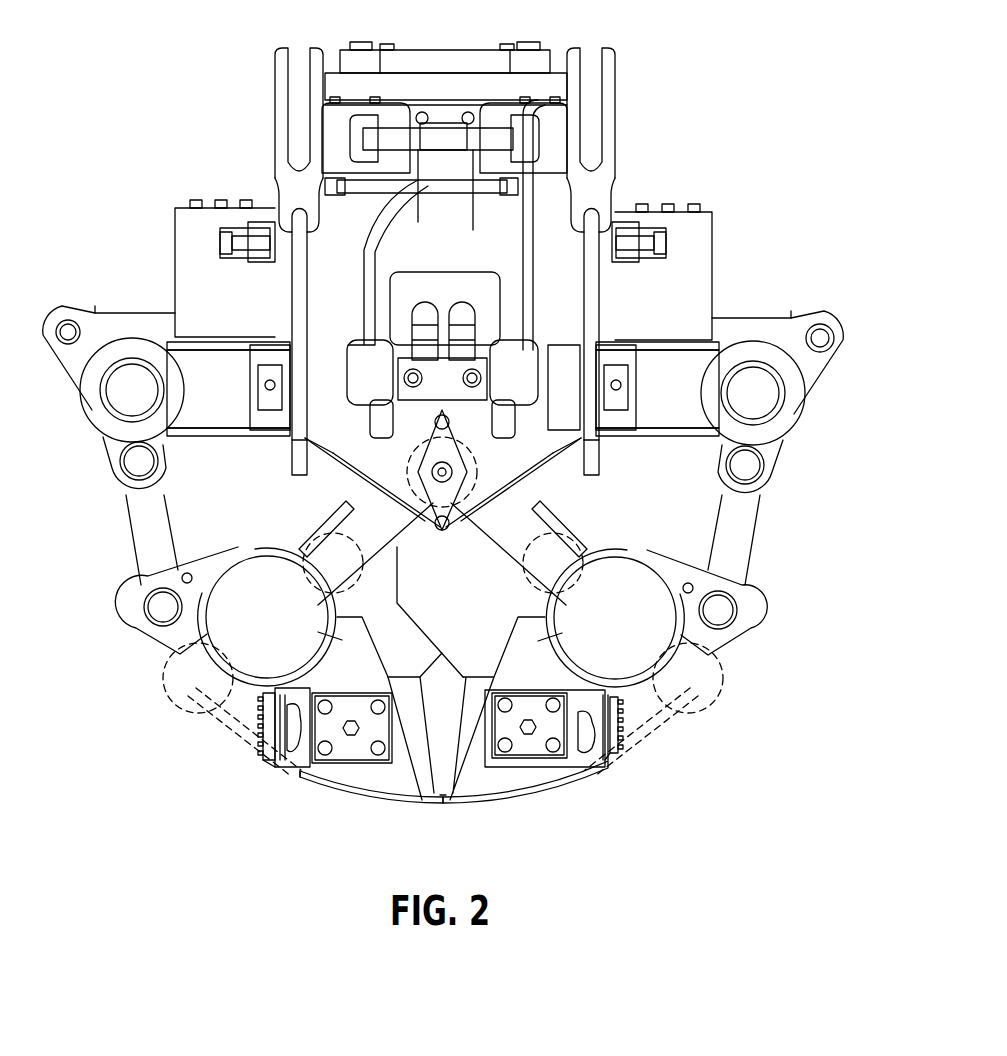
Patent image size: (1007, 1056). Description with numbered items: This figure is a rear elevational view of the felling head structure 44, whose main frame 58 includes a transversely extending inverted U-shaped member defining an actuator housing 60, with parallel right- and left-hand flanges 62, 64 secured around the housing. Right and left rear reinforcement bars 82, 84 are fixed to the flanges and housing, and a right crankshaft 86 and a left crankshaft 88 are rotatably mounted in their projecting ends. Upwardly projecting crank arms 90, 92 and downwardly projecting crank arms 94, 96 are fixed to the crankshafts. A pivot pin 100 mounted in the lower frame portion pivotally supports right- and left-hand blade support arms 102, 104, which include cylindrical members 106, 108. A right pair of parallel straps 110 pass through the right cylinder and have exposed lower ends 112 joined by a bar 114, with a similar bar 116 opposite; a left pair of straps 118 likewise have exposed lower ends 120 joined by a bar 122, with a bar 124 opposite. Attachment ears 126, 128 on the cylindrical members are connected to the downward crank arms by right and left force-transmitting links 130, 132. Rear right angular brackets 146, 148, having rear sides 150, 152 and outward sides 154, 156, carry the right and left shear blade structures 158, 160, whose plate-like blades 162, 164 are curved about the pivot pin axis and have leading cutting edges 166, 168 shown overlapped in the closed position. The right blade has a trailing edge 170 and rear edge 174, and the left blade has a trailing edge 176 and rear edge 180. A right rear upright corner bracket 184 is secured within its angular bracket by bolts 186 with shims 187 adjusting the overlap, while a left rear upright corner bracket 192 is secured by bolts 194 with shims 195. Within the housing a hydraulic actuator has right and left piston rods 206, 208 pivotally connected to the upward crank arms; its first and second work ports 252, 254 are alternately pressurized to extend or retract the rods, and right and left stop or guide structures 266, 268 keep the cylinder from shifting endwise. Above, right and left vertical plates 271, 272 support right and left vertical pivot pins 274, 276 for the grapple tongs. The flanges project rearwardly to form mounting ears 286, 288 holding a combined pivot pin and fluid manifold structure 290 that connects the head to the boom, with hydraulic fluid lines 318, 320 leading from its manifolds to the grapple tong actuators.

The felling head structure 44 is at (660, 114).
The main frame 58 is at (718, 245).
The actuator housing 60 is at (225, 268).
The right-hand flange 62 is at (599, 290).
The left-hand flange 64 is at (308, 295).
The right rear reinforcement bar 82 is at (657, 389).
The left rear reinforcement bar 84 is at (228, 389).
The right crankshaft 86 is at (770, 398).
The left crankshaft 88 is at (118, 398).
The upwardly projecting crank arm 90 is at (822, 365).
The upwardly projecting crank arm 92 is at (62, 365).
The downwardly projecting crank arm 94 is at (775, 461).
The downwardly projecting crank arm 96 is at (120, 461).
The pivot pin 100 is at (477, 472).
The right-hand blade support arm 102 is at (619, 540).
The left-hand blade support arm 104 is at (271, 539).
The cylindrical member 106 is at (615, 618).
The cylindrical member 108 is at (267, 617).
The right pair of parallel straps 110 is at (485, 528).
The exposed lower ends 112 is at (700, 697).
The bar 114 is at (702, 683).
The bar 116 is at (528, 510).
The left pair of straps 118 is at (408, 530).
The exposed lower ends 120 is at (190, 700).
The bar 122 is at (178, 680).
The bar 124 is at (352, 548).
The attachment ear 126 is at (748, 591).
The attachment ear 128 is at (143, 610).
The right drop or force-transmitting link 130 is at (752, 536).
The left drop or force-transmitting link 132 is at (135, 538).
The rear right angular bracket 146 is at (604, 776).
The rear right angular bracket 148 is at (268, 772).
The rear side 150 is at (568, 631).
The rear side 152 is at (312, 631).
The outward side 154 is at (602, 712).
The outward side 156 is at (262, 749).
The right shear blade structure 158 is at (577, 786).
The left shear blade structure 160 is at (321, 790).
The plate-like blade 162 is at (520, 798).
The plate-like blade 164 is at (409, 802).
The leading cutting edge 166 is at (441, 798).
The leading cutting edge 168 is at (443, 807).
The trailing edge 170 is at (581, 776).
The rear edge 174 is at (483, 804).
The trailing edge 176 is at (300, 782).
The rear edge 180 is at (359, 796).
The right rear upright corner bracket 184 is at (475, 725).
The bolts 186 is at (509, 704).
The shims 187 is at (606, 762).
The left rear upright corner bracket 192 is at (402, 722).
The bolts 194 is at (330, 703).
The shims 195 is at (288, 700).
The right piston rod 206 is at (750, 322).
The left piston rod 208 is at (138, 318).
The first work port 252 is at (462, 303).
The second work port 254 is at (425, 303).
The right stop or guide structure 266 is at (648, 232).
The left stop or guide structure 268 is at (228, 232).
The right vertical plate 271 is at (472, 220).
The left vertical plate 272 is at (423, 198).
The right vertical pivot pin 274 is at (529, 42).
The left vertical pivot pin 276 is at (361, 42).
The mounting ear 286 is at (599, 470).
The mounting ear 288 is at (292, 468).
The combined pivot pin and fluid manifold structure 290 is at (569, 350).
The hydraulic fluid line 318 is at (522, 238).
The hydraulic fluid line 320 is at (365, 246).